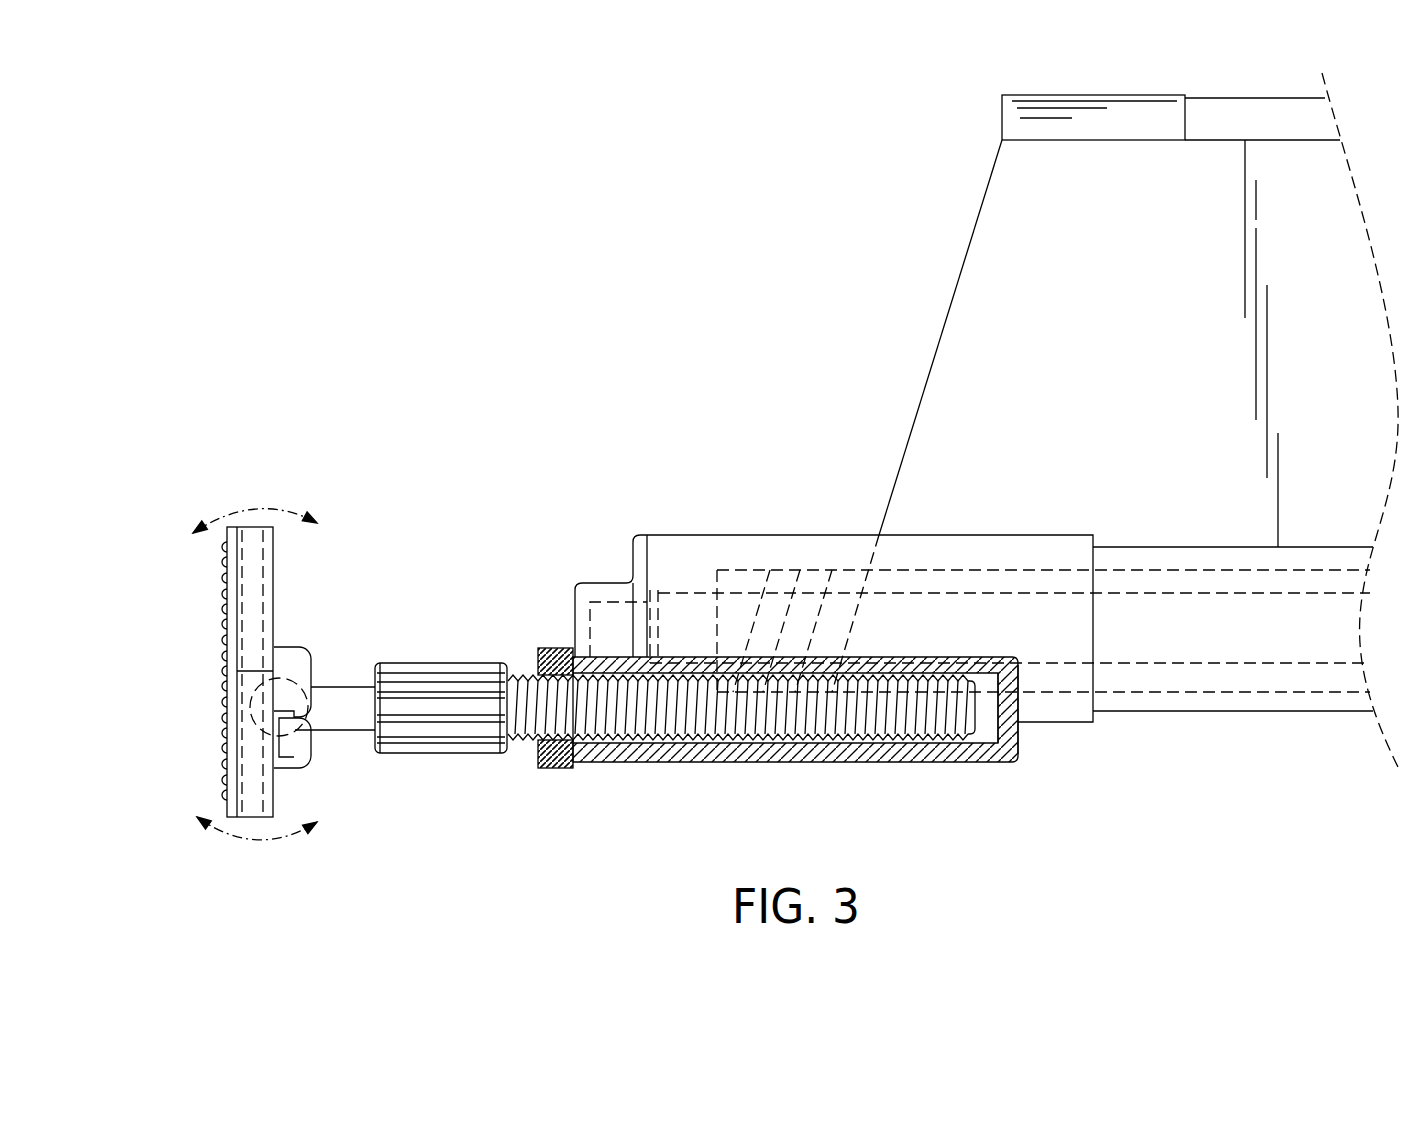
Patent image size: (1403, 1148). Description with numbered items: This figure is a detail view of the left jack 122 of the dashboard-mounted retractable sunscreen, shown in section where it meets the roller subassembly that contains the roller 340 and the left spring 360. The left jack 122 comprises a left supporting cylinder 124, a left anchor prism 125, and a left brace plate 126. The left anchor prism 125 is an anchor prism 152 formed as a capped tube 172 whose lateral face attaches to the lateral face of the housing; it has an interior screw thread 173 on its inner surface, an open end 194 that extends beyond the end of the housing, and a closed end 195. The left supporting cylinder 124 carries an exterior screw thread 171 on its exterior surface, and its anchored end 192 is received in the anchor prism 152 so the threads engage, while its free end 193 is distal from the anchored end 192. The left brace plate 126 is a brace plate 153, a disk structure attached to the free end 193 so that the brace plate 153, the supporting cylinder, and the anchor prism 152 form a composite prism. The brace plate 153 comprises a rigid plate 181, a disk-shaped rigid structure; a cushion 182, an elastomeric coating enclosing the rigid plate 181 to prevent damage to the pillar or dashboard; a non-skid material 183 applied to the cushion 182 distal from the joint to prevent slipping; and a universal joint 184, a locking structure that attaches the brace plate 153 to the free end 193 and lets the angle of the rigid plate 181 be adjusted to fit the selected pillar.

The left jack 122 is at (287, 458).
The left supporting cylinder 124 is at (523, 715).
The left anchor prism 125 is at (882, 762).
The left brace plate 126 is at (210, 503).
The anchor prism 152 is at (1000, 735).
The brace plate 153 is at (563, 647).
The exterior screw thread 171 is at (636, 712).
The capped tube 172 is at (755, 762).
The interior screw thread 173 is at (558, 766).
The rigid plate 181 is at (252, 555).
The cushion 182 is at (273, 557).
The non-skid material 183 is at (227, 596).
The universal joint 184 is at (328, 720).
The anchored end 192 is at (970, 718).
The free end 193 is at (516, 738).
The open end 194 is at (538, 668).
The closed end 195 is at (1020, 733).
The roller 340 is at (677, 618).
The left spring 360 is at (603, 623).